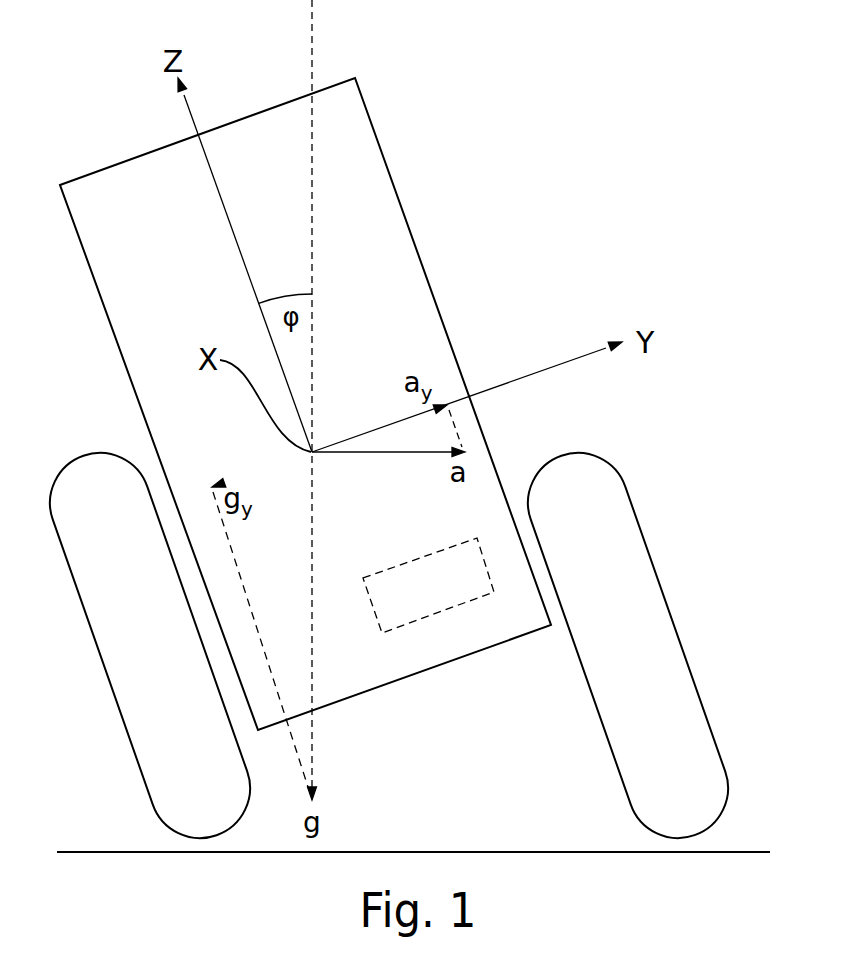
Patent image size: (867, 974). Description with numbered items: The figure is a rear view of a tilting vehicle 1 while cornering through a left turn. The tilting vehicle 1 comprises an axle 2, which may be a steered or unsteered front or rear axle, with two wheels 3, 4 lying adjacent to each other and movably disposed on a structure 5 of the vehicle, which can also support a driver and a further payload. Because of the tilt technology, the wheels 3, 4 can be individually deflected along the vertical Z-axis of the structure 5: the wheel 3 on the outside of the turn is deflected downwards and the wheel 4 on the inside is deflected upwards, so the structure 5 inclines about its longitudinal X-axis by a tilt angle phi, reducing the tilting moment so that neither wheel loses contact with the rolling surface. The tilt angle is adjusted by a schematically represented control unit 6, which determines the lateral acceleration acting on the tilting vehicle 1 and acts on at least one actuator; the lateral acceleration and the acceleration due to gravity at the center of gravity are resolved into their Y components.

The tilting vehicle 1 is at (403, 100).
The axle 2 is at (697, 580).
The wheel 3 is at (662, 653).
The wheel 4 is at (132, 633).
The structure of the vehicle 5 is at (147, 291).
The control unit 6 is at (418, 599).